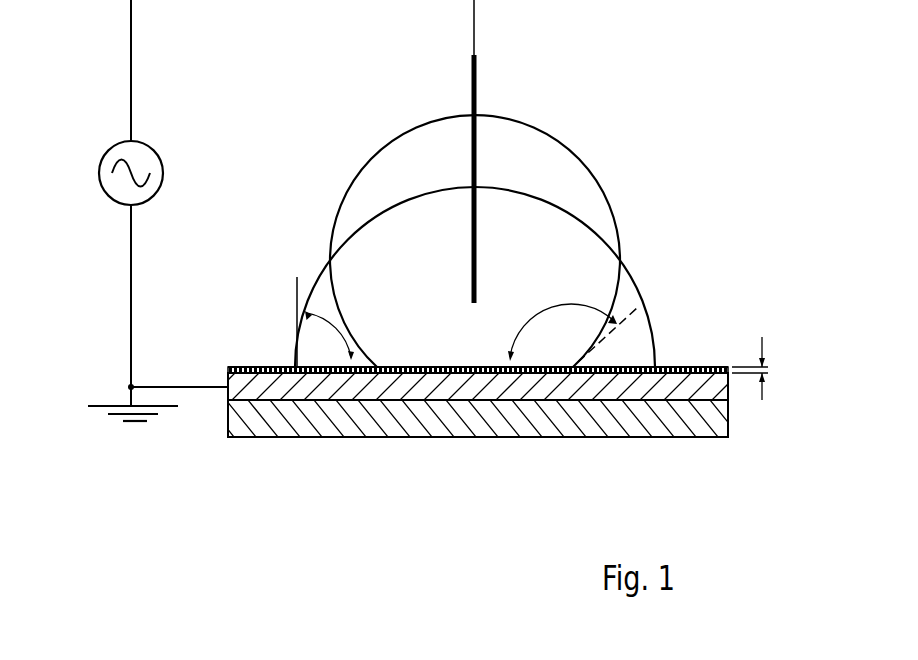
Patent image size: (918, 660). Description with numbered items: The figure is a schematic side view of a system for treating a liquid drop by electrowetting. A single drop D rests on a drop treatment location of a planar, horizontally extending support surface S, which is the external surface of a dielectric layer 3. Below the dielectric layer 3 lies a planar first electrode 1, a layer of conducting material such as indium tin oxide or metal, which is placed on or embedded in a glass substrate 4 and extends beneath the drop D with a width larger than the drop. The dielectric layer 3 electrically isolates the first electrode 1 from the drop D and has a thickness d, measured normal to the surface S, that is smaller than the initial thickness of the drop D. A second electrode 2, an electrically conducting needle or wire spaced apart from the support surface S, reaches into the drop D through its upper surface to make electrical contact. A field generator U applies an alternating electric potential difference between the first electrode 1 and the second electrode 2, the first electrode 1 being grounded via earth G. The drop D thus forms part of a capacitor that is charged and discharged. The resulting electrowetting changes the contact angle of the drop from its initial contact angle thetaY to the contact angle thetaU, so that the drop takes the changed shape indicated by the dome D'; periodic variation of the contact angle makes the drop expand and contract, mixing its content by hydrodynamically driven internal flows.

The first electrode 1 is at (251, 392).
The second electrode 2 is at (477, 73).
The dielectric layer 3 is at (250, 371).
The substrate 4 is at (310, 421).
The field generator U is at (149, 203).
The earth G is at (115, 418).
The drop D is at (492, 241).
The dome D' is at (493, 277).
The support surface S is at (697, 360).
The thickness of the dielectric layer d is at (758, 368).
The contact angle as a result of the electrowetting effect thetaU is at (329, 341).
The initial contact angle thetaY is at (572, 333).